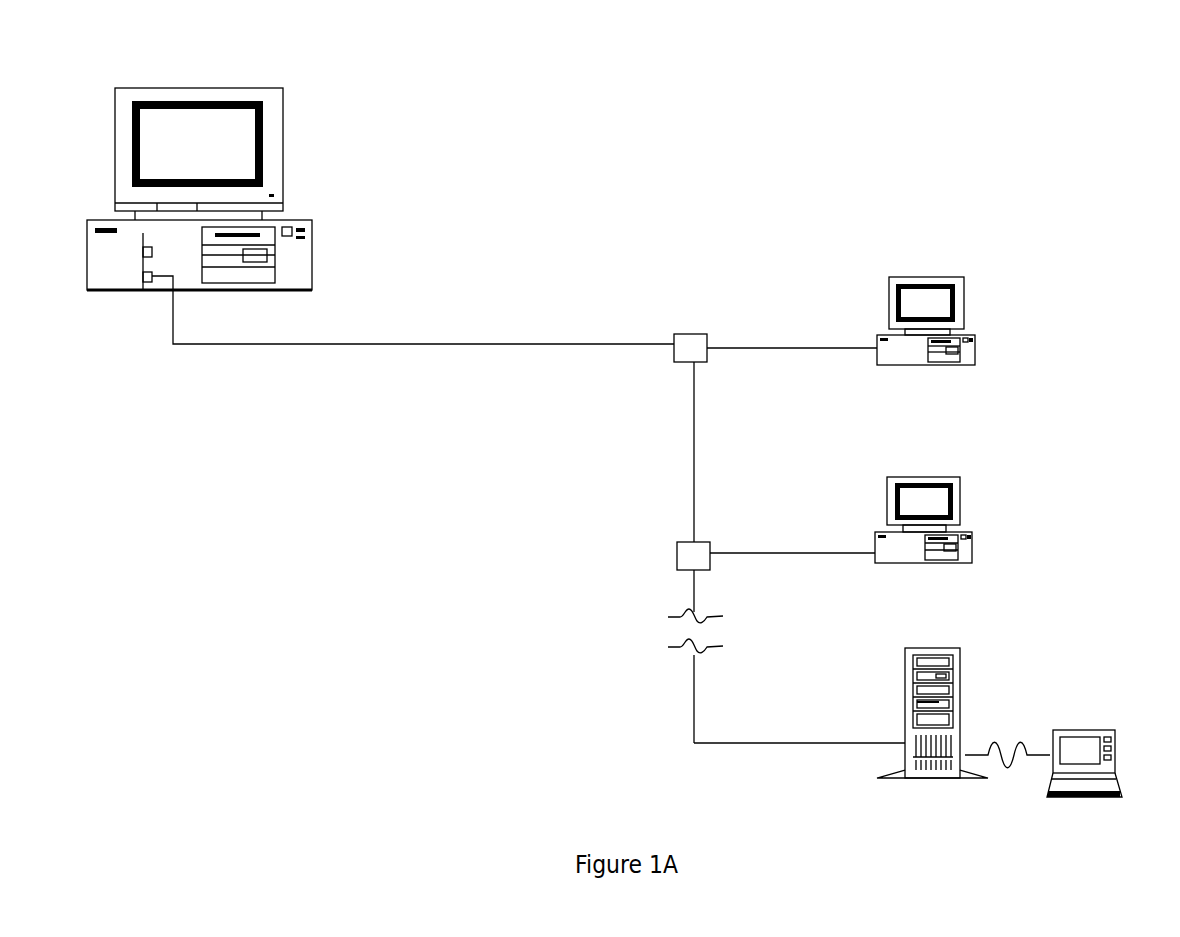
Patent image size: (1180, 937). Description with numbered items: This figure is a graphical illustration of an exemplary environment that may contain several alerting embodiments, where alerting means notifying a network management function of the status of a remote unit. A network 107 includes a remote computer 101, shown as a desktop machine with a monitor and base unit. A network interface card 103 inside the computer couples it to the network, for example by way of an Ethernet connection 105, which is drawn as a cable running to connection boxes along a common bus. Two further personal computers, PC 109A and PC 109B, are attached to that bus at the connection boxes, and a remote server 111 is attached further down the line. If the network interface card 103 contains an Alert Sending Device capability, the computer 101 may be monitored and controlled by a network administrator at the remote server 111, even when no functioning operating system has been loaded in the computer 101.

The remote computer 101 is at (215, 88).
The network interface card 103 is at (144, 300).
The Ethernet connection 105 is at (509, 363).
The network 107 is at (716, 172).
The PC 109A is at (964, 286).
The PC 109B is at (961, 486).
The remote server 111 is at (957, 648).